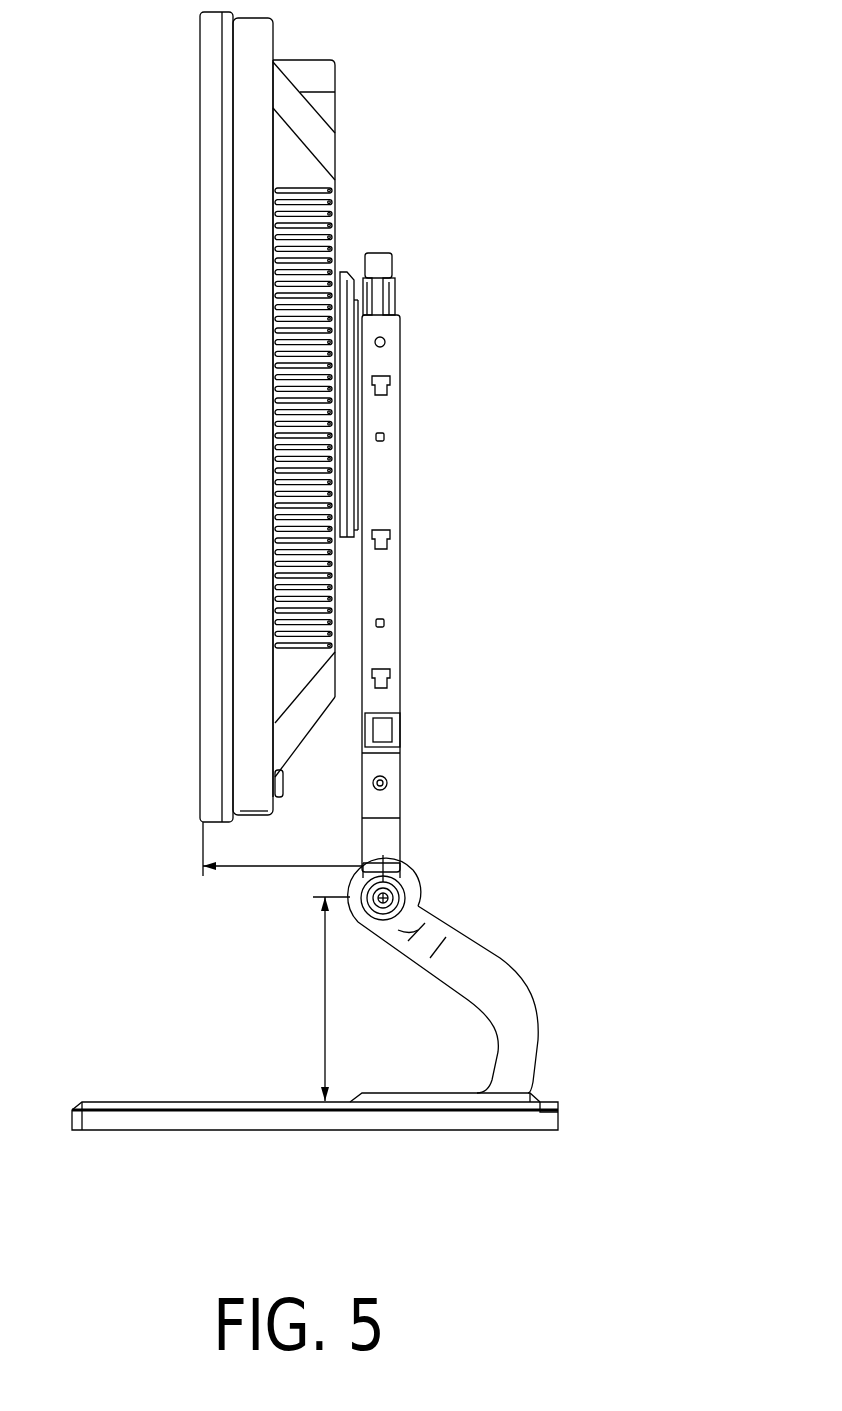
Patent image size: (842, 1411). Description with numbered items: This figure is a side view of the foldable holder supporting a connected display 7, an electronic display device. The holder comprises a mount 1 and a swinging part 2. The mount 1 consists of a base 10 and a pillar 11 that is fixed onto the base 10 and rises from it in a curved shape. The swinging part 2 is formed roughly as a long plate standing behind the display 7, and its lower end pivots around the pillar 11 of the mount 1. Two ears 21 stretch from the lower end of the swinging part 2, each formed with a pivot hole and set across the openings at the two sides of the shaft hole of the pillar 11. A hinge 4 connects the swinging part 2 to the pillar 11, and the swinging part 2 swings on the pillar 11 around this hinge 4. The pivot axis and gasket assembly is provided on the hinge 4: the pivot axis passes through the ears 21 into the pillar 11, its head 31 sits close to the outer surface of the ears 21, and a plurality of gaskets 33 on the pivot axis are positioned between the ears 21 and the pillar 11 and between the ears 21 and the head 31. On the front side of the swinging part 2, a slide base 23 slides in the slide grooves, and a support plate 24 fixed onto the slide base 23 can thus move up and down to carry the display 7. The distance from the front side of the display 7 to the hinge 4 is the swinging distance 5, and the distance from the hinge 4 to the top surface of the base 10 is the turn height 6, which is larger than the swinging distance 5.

The display 7 is at (195, 40).
The support plate 24 is at (341, 275).
The slide base 23 is at (357, 412).
The swinging part 2 is at (403, 518).
The ears 21 is at (403, 872).
The hinge 4 is at (410, 895).
The head 31 is at (415, 912).
The gaskets 33 is at (430, 945).
The pillar 11 is at (522, 1018).
The mount 1 is at (128, 1095).
The base 10 is at (237, 1120).
The swinging distance 5 is at (282, 849).
The turn height 6 is at (325, 999).